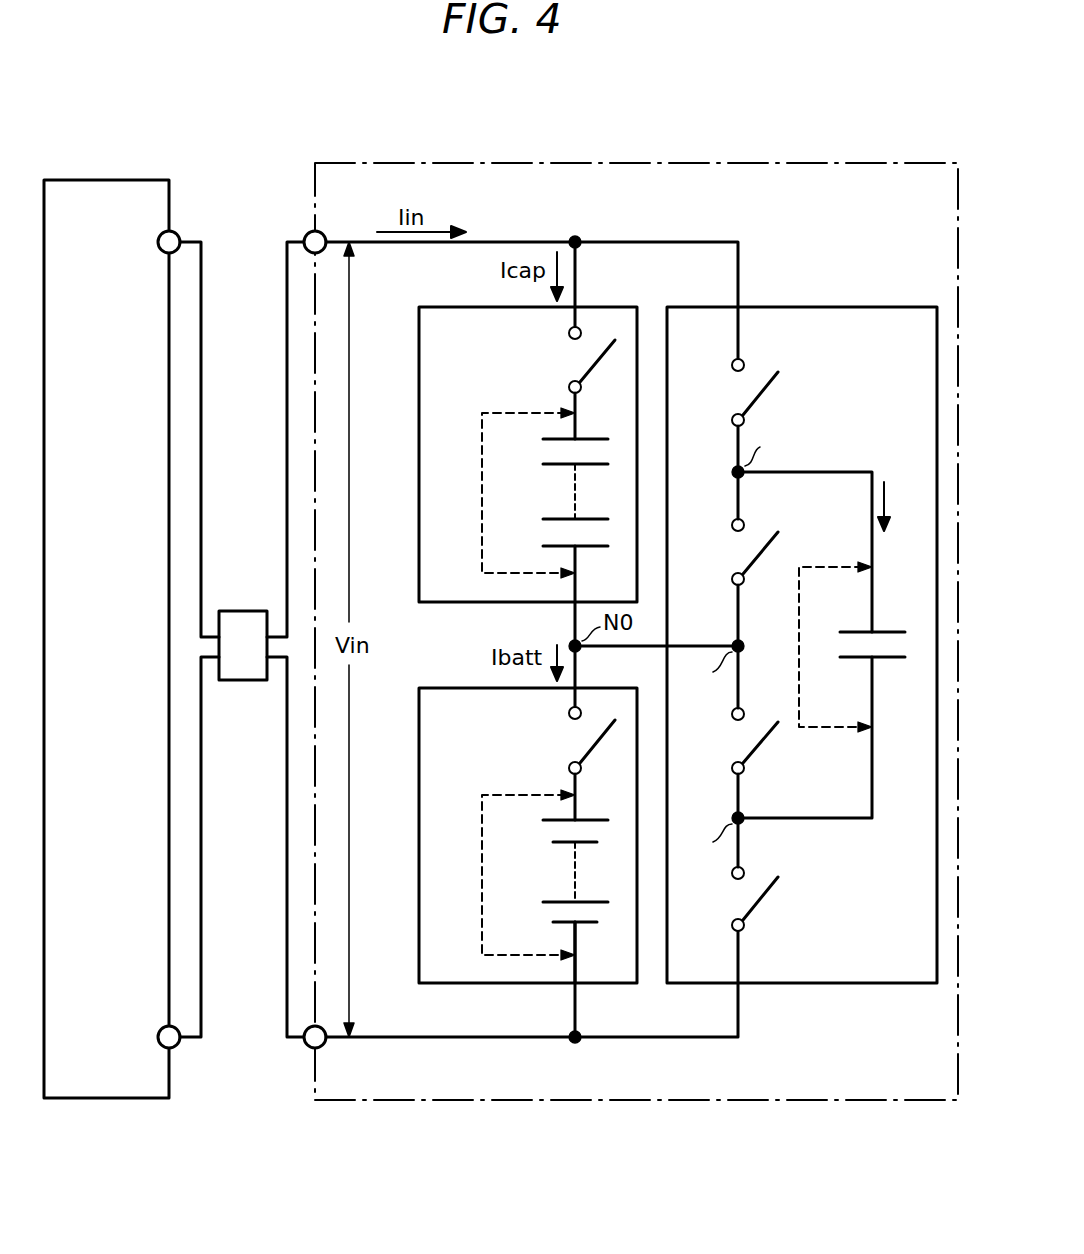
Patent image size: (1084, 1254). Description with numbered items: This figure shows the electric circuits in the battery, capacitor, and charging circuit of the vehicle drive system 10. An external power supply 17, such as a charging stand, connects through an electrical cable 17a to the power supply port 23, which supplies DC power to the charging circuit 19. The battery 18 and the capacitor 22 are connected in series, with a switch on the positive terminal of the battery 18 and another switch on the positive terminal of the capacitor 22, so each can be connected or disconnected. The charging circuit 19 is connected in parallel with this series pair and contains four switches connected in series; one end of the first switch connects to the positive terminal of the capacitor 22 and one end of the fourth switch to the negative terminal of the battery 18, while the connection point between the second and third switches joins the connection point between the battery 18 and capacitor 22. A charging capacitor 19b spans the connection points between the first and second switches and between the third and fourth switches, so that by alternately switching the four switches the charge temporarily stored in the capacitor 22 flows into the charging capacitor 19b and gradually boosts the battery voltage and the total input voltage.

The vehicle drive system 10 is at (690, 118).
The external power supply 17 is at (148, 180).
The electrical cable 17a is at (182, 239).
The battery 18 is at (444, 688).
The charging circuit 19 is at (802, 616).
The charging capacitor 19b is at (898, 631).
The capacitor 22 is at (444, 307).
The power supply port 23 is at (247, 611).